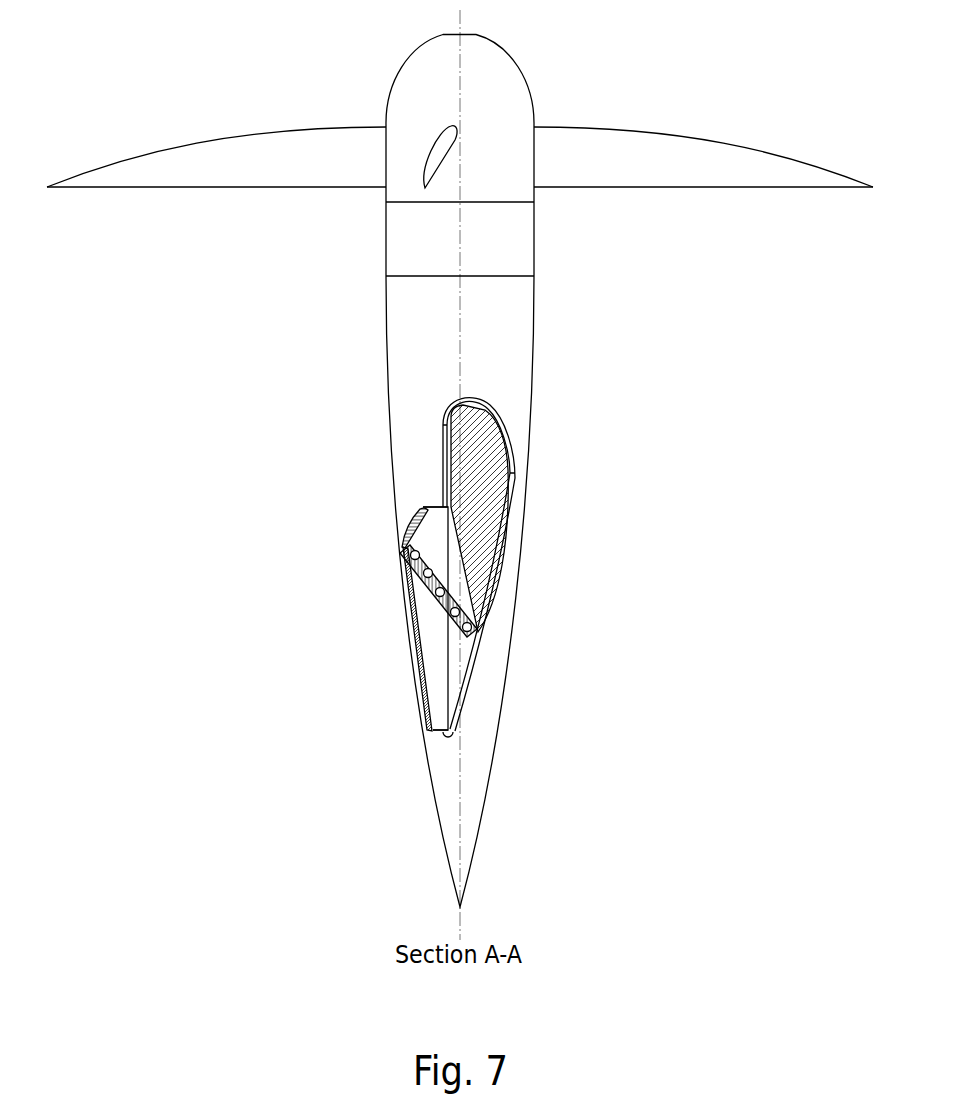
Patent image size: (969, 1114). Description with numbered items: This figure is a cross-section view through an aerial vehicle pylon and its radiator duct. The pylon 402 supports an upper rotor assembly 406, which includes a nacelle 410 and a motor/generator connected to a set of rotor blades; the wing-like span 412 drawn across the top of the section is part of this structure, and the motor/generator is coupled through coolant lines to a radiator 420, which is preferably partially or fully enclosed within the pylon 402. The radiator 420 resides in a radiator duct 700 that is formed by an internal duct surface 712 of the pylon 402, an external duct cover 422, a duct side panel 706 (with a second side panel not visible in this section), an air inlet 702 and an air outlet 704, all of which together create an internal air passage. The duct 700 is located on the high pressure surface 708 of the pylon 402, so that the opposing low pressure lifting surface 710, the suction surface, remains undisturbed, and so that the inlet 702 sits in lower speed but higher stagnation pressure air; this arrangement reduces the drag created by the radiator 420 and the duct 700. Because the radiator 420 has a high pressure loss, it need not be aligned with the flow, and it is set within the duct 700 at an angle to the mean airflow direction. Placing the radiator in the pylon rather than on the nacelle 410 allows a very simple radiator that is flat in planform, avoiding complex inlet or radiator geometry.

The upper rotor assembly 406 is at (460, 455).
The nacelle 410 is at (497, 323).
The wing 412 is at (180, 169).
The pylon 402 is at (490, 524).
The radiator 420 is at (423, 610).
The external duct cover 422 is at (405, 535).
The radiator duct 700 is at (458, 625).
The air inlet 702 is at (434, 500).
The air outlet 704 is at (432, 739).
The duct side panel 706 is at (435, 672).
The high pressure surface 708 is at (441, 446).
The low pressure lifting surface 710 is at (516, 479).
The internal duct surface 712 is at (513, 573).